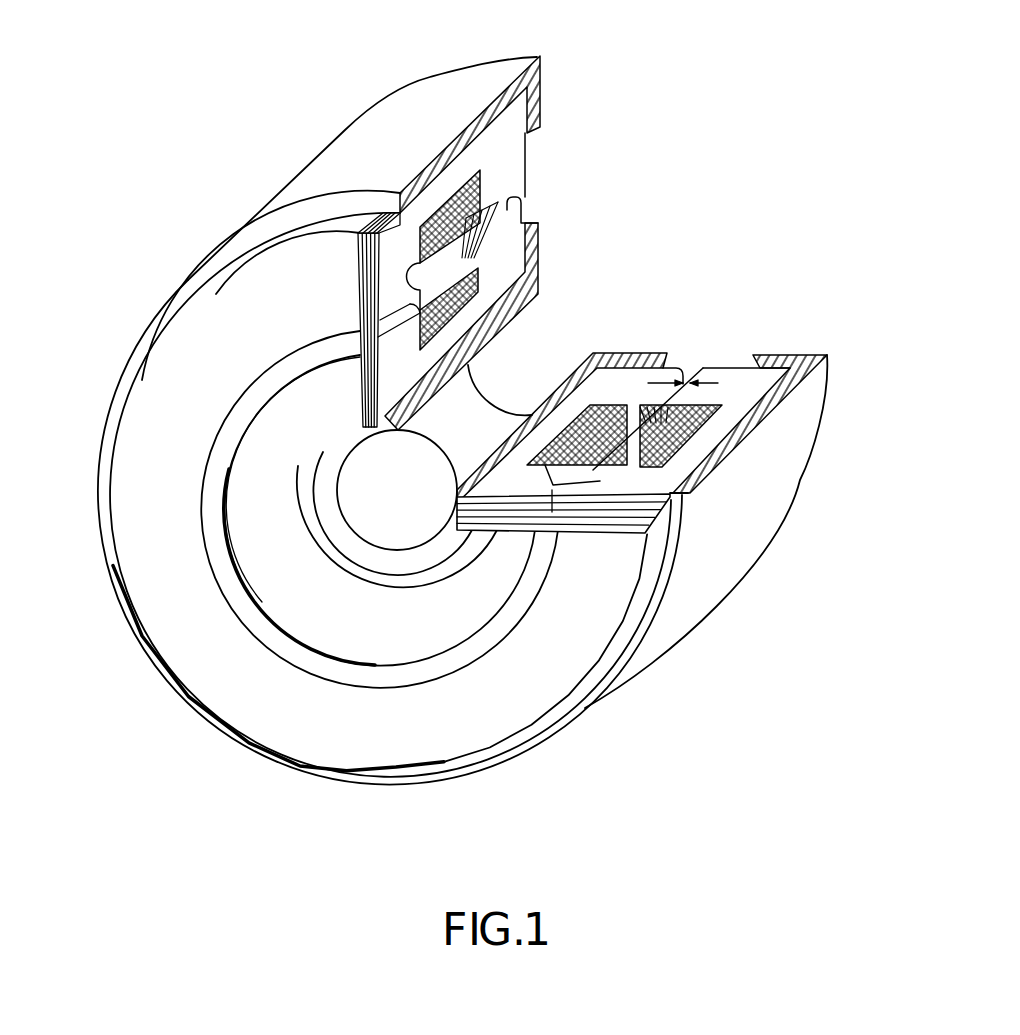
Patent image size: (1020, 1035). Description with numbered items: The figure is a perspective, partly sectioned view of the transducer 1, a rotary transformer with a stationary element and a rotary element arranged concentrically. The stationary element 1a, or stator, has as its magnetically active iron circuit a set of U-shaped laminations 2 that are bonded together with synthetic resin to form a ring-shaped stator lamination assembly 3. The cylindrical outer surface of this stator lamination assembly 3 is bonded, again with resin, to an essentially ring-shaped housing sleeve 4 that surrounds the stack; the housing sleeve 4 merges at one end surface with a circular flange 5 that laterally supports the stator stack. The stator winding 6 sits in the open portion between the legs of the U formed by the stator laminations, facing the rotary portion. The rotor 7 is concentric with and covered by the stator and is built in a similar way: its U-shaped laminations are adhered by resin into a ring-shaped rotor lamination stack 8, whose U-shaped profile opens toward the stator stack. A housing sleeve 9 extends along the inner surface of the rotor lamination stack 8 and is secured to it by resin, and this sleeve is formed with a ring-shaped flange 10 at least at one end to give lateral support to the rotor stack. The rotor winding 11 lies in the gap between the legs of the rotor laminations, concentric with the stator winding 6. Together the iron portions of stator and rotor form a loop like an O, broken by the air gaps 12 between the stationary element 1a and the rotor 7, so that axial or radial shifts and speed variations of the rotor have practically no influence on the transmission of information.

The transducer 1 is at (382, 753).
The stationary element 1a is at (178, 283).
The U-shaped laminations 2 is at (357, 256).
The stator lamination assembly 3 is at (207, 363).
The housing sleeve 4 is at (422, 108).
The circular flange 5 is at (540, 97).
The stator winding 6 is at (479, 192).
The rotor 7 is at (226, 474).
The rotor lamination stack 8 is at (487, 537).
The housing sleeve 9 is at (340, 532).
The ring-shaped flange 10 is at (531, 267).
The rotor winding 11 is at (592, 404).
The air gaps 12 is at (683, 381).